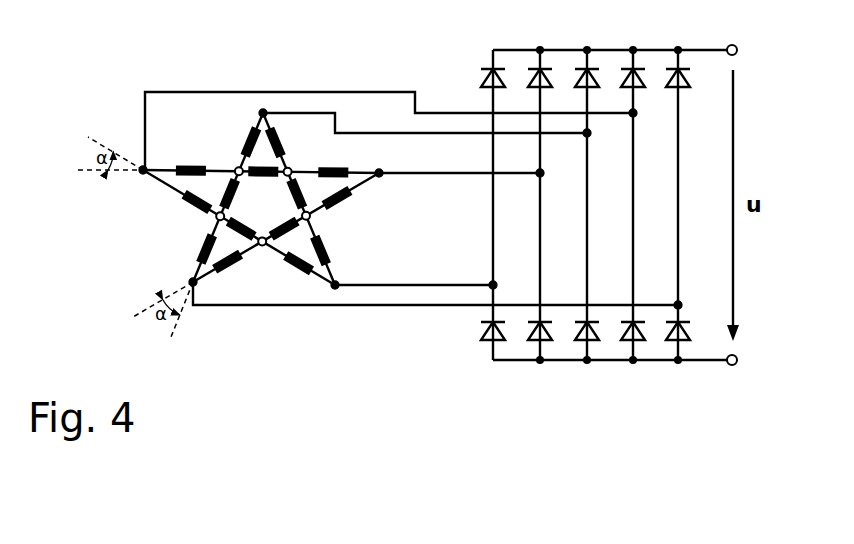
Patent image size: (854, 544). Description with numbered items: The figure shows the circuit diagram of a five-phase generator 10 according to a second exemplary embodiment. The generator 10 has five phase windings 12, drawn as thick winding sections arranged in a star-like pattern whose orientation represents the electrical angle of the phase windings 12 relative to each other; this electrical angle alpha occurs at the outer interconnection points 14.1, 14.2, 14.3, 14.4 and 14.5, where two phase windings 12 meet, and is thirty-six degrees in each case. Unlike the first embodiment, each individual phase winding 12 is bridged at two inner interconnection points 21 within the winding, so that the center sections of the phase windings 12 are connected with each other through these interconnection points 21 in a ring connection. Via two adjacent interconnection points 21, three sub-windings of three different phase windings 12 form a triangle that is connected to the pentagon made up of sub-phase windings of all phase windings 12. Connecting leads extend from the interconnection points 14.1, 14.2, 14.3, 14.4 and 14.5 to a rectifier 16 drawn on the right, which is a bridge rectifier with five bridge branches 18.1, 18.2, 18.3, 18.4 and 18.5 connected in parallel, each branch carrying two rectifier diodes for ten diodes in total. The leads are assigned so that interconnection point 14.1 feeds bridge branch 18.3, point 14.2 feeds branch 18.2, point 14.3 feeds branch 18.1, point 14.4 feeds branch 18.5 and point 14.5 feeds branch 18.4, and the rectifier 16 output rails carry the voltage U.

The five-phase generator 10 is at (231, 376).
The phase winding 12 is at (190, 180).
The interconnection point 14.1 is at (264, 109).
The interconnection point 14.2 is at (381, 170).
The interconnection point 14.3 is at (334, 290).
The interconnection point 14.4 is at (191, 282).
The interconnection point 14.5 is at (141, 168).
The rectifier 16 is at (577, 418).
The bridge branch 18.1 is at (492, 371).
The bridge branch 18.2 is at (540, 371).
The bridge branch 18.3 is at (587, 371).
The bridge branch 18.4 is at (633, 371).
The bridge branch 18.5 is at (680, 371).
The interconnection point 21 is at (236, 169).